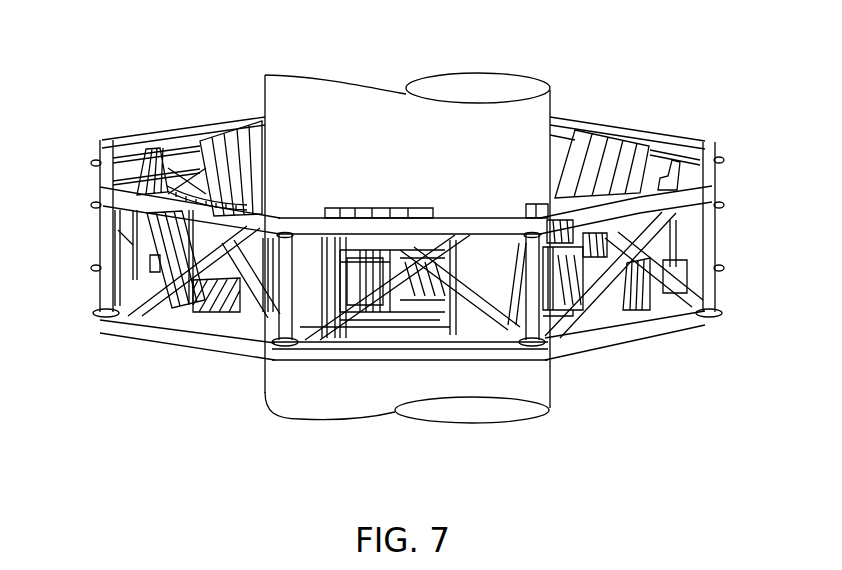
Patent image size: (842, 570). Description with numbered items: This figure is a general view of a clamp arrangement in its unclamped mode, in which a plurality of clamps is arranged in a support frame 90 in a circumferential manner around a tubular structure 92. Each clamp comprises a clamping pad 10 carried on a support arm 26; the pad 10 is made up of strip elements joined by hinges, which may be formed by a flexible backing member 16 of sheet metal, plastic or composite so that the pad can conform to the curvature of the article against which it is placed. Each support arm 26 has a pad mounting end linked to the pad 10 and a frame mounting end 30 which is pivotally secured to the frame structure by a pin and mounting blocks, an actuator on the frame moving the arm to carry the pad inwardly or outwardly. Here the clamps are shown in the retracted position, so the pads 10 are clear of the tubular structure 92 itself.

The tubular structure 92 is at (423, 130).
The clamping pad 10 is at (220, 128).
The backing member 16 is at (682, 180).
The frame mounting end 30 is at (105, 256).
The support frame 90 is at (688, 202).
The support arm 26 is at (223, 320).